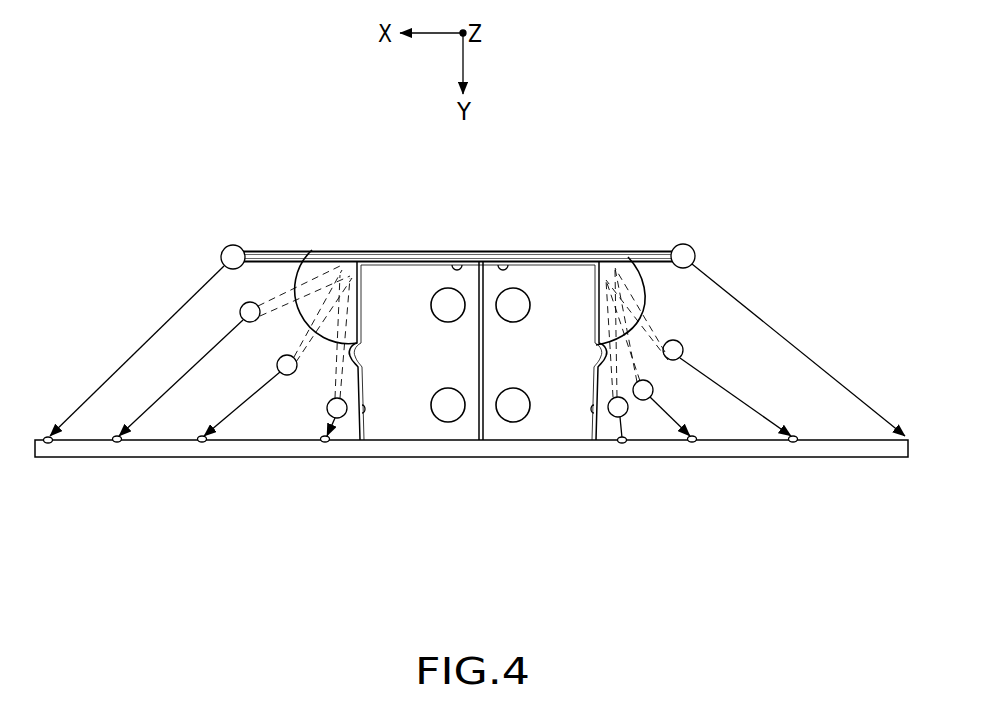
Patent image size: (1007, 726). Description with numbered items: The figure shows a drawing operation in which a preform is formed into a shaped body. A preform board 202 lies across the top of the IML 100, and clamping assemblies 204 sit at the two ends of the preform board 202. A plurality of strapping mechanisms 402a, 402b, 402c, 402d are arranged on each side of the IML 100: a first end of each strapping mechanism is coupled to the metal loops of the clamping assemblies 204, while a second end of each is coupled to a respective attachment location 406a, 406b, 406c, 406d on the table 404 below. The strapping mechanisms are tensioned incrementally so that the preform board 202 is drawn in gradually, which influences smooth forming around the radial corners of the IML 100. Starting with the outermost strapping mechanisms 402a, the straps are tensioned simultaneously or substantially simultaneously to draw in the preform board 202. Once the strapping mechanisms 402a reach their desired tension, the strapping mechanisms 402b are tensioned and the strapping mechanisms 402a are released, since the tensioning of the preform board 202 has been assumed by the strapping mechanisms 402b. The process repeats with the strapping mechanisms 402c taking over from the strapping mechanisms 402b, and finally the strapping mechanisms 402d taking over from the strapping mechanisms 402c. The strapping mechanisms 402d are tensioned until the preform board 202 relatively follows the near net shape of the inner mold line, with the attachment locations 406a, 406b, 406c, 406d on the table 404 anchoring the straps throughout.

The IML 100 is at (518, 284).
The preform board 202 is at (437, 250).
The clamping assemblies 204 is at (232, 245).
The outermost strapping mechanism 402a is at (163, 322).
The strapping mechanism 402b is at (207, 352).
The strapping mechanism 402c is at (240, 408).
The strapping mechanism 402d is at (323, 418).
The table 404 is at (853, 440).
The attachment location 406a is at (50, 457).
The attachment location 406b is at (117, 457).
The attachment location 406c is at (202, 457).
The attachment location 406d is at (325, 457).